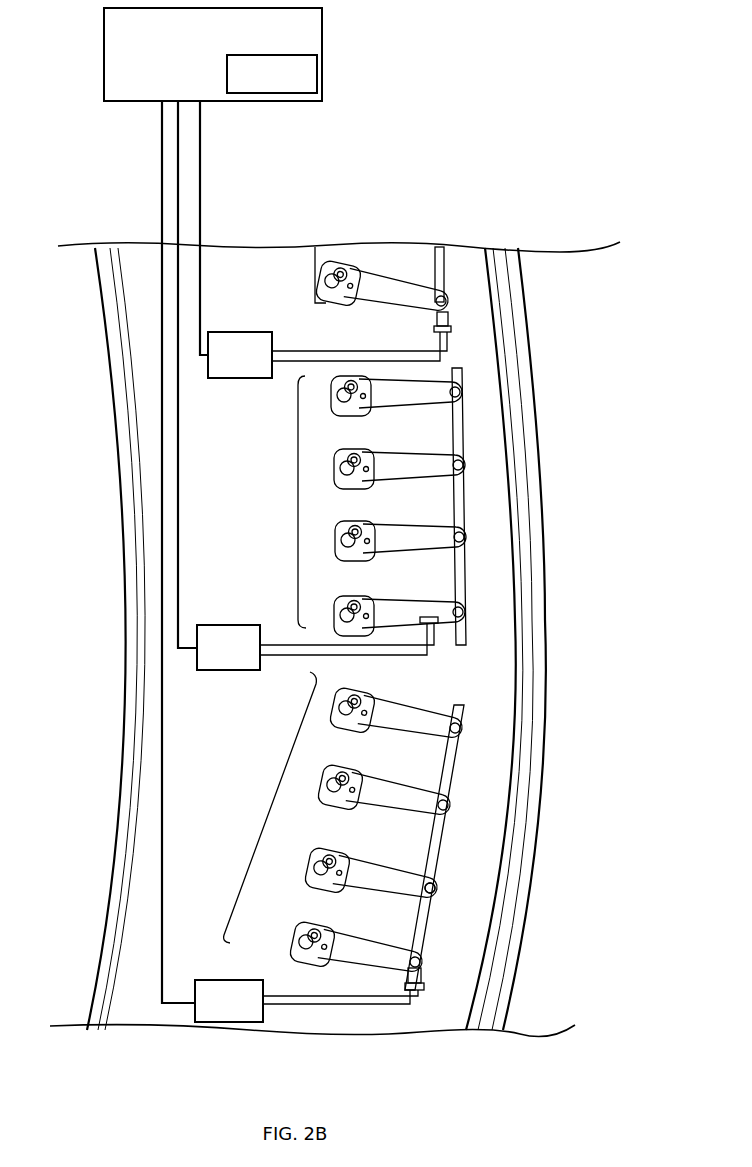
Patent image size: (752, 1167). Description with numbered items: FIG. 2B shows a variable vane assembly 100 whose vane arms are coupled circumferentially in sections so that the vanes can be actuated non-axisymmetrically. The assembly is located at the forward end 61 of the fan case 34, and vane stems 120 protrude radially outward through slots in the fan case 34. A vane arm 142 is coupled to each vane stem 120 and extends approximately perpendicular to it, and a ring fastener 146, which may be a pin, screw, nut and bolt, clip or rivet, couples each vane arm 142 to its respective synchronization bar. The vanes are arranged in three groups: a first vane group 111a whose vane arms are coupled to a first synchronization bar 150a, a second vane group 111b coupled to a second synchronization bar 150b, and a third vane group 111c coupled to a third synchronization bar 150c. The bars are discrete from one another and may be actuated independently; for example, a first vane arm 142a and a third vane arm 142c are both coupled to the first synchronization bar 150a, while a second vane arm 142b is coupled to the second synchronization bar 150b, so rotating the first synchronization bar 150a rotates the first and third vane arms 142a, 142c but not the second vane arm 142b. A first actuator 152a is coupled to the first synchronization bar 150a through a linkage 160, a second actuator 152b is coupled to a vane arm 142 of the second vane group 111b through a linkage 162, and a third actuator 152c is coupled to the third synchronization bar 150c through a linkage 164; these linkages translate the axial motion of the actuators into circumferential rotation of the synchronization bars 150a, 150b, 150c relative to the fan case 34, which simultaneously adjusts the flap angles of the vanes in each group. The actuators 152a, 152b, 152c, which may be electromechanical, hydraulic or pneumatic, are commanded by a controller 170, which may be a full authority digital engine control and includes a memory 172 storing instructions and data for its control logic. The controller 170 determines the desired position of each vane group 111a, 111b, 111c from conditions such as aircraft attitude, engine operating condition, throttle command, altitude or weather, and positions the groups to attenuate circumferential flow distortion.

The controller 170 is at (155, 49).
The memory 172 is at (288, 83).
The variable vane assembly 100 is at (428, 195).
The vane arm 142 is at (392, 290).
The first vane arm 142a is at (440, 718).
The second vane arm 142b is at (435, 610).
The third vane arm 142c is at (407, 803).
The first vane group 111a is at (272, 790).
The second vane group 111b is at (297, 490).
The third vane group 111c is at (316, 272).
The first synchronization bar 150a is at (437, 843).
The second synchronization bar 150b is at (458, 420).
The third synchronization bar 150c is at (443, 273).
The first actuator 152a is at (209, 1011).
The second actuator 152b is at (208, 658).
The third actuator 152c is at (220, 366).
The linkage 160 is at (312, 1003).
The linkage 162 is at (285, 648).
The linkage 164 is at (293, 358).
The vane stem 120 is at (360, 608).
The ring fastener 146 is at (435, 888).
The fan case 34 is at (198, 484).
The forward end 61 is at (128, 690).